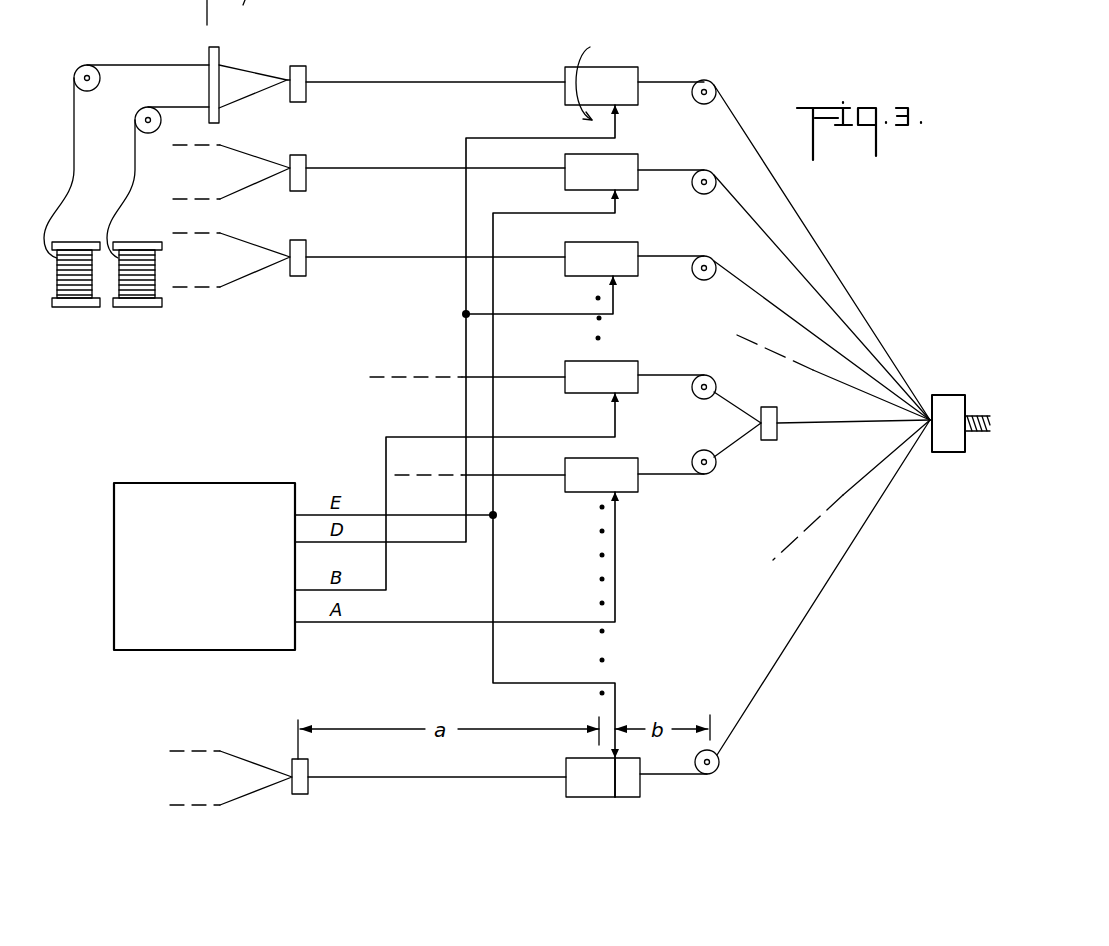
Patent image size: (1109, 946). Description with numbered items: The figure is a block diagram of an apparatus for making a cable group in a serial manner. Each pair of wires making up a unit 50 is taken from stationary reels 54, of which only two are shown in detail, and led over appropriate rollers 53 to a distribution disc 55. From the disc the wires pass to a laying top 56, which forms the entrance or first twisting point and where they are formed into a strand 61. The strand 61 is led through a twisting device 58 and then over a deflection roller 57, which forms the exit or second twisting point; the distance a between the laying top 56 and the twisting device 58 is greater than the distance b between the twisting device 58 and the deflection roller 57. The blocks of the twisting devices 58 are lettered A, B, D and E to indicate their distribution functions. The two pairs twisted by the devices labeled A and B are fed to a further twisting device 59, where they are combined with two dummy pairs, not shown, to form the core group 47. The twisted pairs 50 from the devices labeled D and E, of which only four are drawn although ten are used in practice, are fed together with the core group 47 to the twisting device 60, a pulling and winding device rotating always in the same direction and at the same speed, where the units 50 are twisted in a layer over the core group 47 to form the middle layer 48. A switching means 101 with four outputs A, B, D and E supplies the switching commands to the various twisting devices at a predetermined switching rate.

The core group 47 is at (852, 425).
The middle layer 48 is at (975, 440).
The twisted pair unit 50 is at (800, 213).
The guide pulleys 53 is at (173, 108).
The stationary reel 54 is at (85, 302).
The distribution disc 55 is at (219, 52).
The laying top 56 is at (307, 62).
The deflection roller 57 is at (716, 84).
The twisting device 58 is at (662, 52).
The twisting device 59 is at (771, 442).
The twisting device 60 is at (950, 393).
The strand 61 is at (416, 80).
The switching means 101 is at (193, 482).